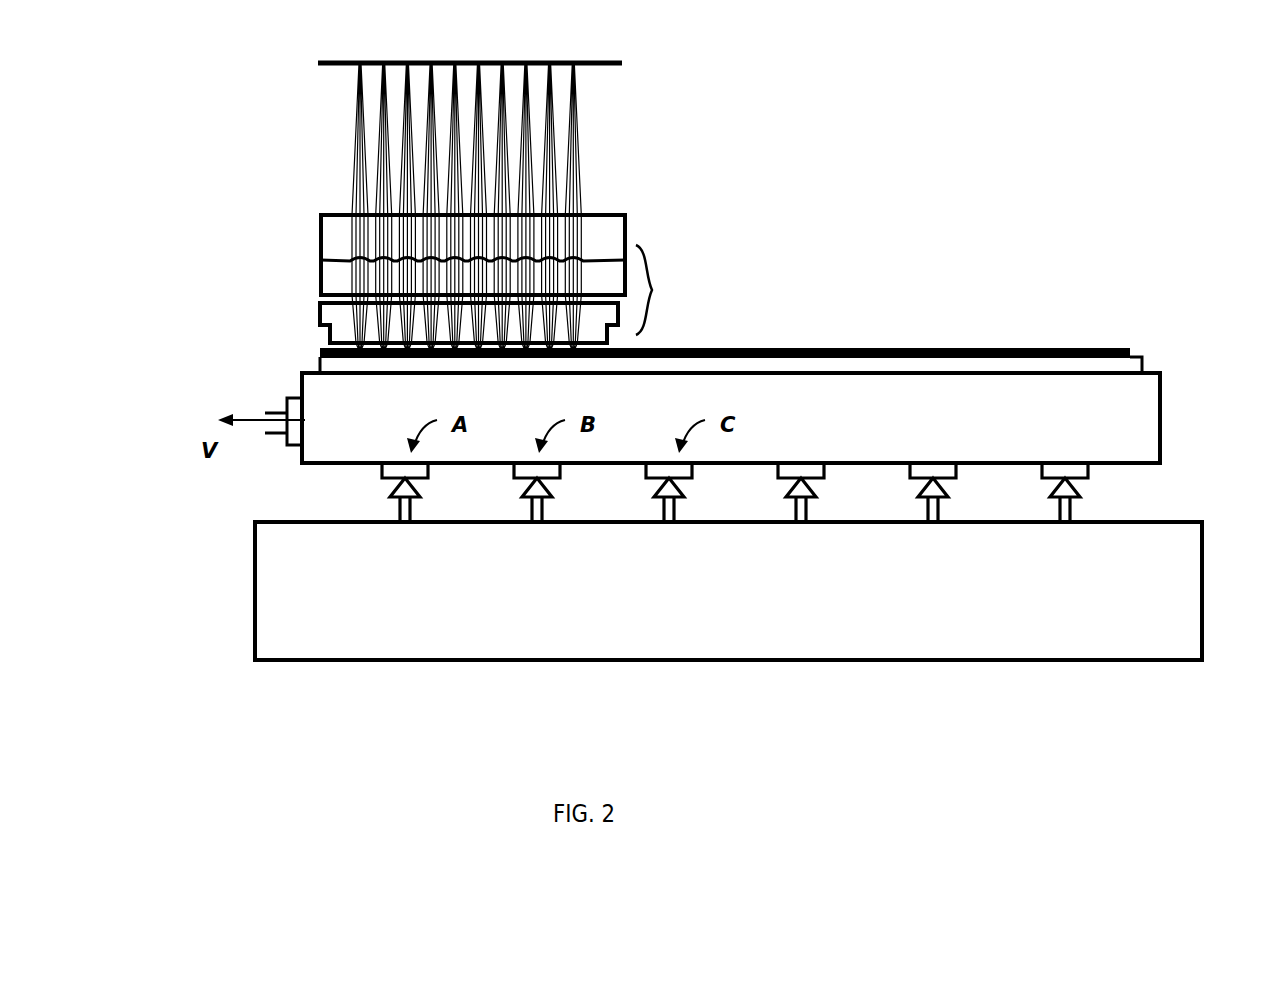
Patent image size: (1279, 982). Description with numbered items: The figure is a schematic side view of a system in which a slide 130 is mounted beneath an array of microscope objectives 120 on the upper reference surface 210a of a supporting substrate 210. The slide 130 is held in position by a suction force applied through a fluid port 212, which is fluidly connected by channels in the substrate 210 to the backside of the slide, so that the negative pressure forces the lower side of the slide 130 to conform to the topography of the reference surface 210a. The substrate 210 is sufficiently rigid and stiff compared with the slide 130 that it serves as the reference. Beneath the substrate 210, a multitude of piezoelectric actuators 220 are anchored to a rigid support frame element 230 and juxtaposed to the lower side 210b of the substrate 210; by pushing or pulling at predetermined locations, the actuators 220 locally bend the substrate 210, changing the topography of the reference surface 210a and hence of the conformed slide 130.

The array of microscope objectives 120 is at (653, 285).
The slide 130 is at (712, 343).
The supporting substrate 210 is at (987, 403).
The reference surface 210a is at (847, 368).
The lower side of the support substrate 210b is at (1137, 480).
The fluid port 212 is at (277, 407).
The actuator 220 is at (392, 486).
The rigid support frame element 230 is at (727, 632).